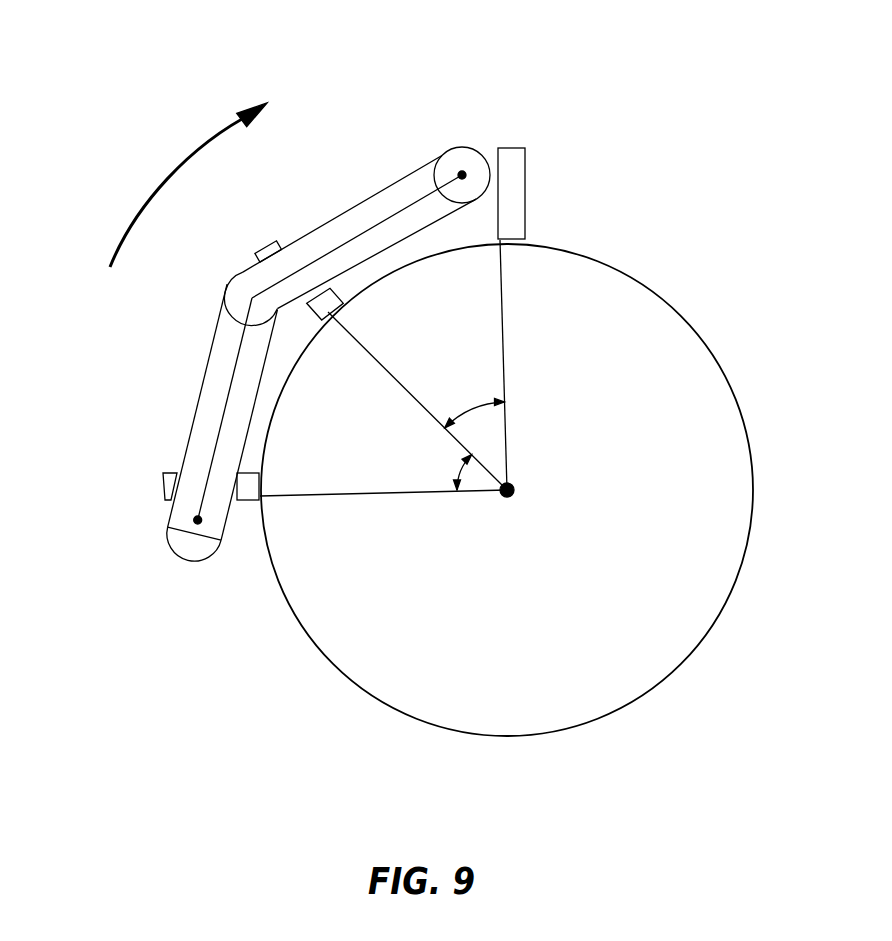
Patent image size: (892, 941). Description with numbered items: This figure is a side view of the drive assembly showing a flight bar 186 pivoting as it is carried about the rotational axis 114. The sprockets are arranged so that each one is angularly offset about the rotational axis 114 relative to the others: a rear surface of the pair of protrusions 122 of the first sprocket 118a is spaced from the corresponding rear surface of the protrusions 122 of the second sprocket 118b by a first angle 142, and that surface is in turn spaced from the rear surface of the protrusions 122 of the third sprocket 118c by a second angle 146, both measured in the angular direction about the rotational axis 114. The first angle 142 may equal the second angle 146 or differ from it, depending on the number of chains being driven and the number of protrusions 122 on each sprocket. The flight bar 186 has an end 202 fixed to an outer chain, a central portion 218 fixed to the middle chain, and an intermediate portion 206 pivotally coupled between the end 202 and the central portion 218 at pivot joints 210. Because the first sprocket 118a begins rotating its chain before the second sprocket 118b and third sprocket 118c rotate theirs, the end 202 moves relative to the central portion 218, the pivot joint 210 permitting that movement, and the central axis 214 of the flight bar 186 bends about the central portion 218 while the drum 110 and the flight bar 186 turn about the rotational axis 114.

The drum 110 is at (697, 328).
The rotational axis 114 is at (513, 491).
The first sprocket 118a is at (151, 478).
The second sprocket 118b is at (265, 230).
The third sprocket 118c is at (534, 135).
The protrusions 122 is at (525, 193).
The first angle 142 is at (456, 473).
The second angle 146 is at (466, 413).
The flight bar 186 is at (395, 91).
The end 202 is at (469, 148).
The intermediate portion 206 is at (383, 188).
The pivot joint 210 is at (443, 132).
The central axis 214 is at (233, 365).
The central portion 218 is at (235, 280).